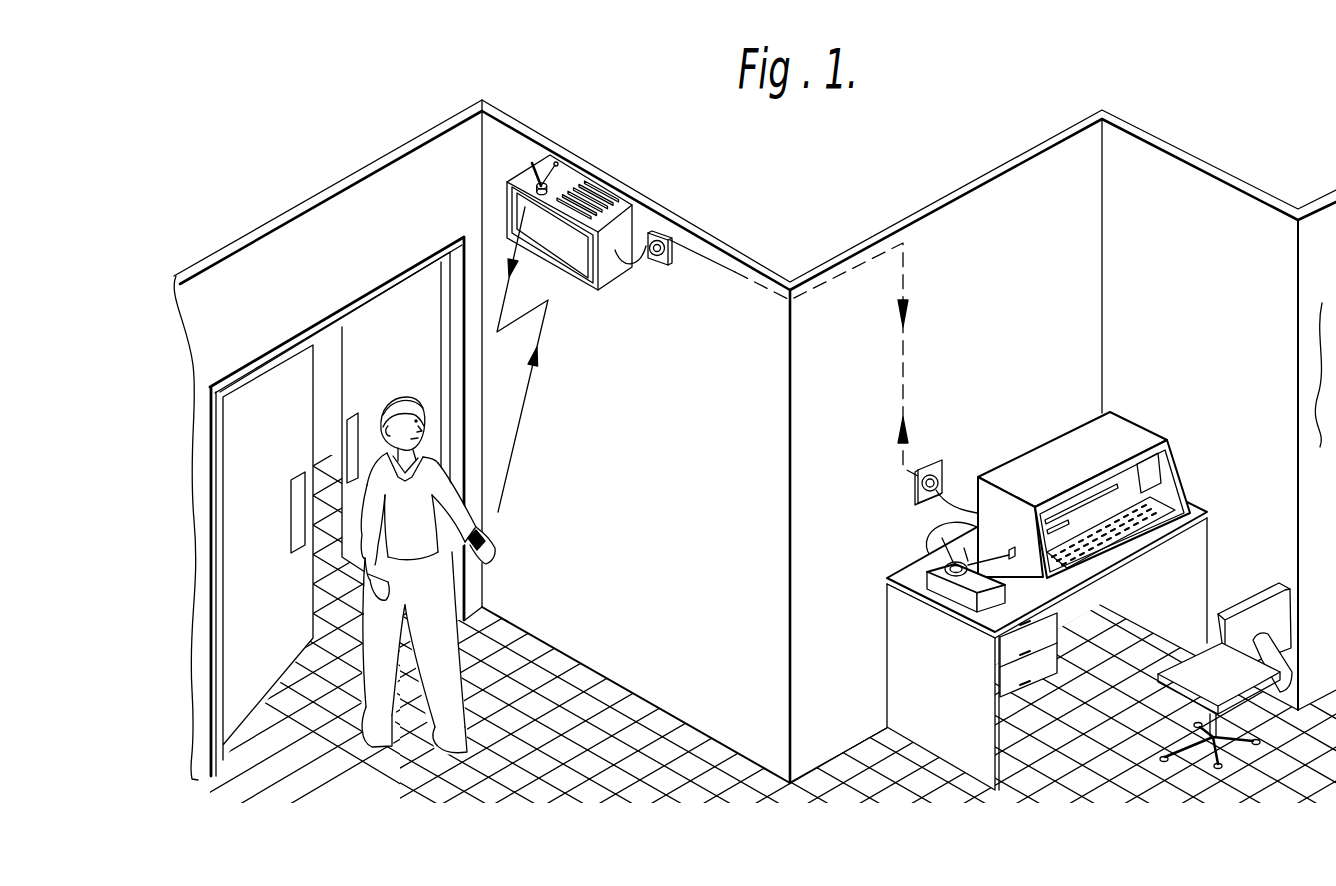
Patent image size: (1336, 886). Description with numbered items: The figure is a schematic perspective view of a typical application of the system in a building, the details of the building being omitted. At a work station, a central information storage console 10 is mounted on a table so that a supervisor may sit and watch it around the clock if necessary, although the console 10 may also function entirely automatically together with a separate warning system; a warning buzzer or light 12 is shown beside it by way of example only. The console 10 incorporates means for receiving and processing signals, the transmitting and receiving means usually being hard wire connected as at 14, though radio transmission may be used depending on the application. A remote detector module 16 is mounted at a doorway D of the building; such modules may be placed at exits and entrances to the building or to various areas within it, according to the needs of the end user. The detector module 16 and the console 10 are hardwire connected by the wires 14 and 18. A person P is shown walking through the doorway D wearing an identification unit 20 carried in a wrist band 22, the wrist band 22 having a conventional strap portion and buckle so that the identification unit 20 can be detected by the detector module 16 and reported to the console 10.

The central information storage console 10 is at (1128, 423).
The warning buzzer or light 12 is at (967, 602).
The hard wire connection 14 is at (959, 503).
The remote detector module 16 is at (618, 187).
The wires 18 is at (655, 236).
The identification unit 20 is at (502, 510).
The wrist band 22 is at (487, 532).
The person P is at (392, 394).
The doorway D is at (278, 447).